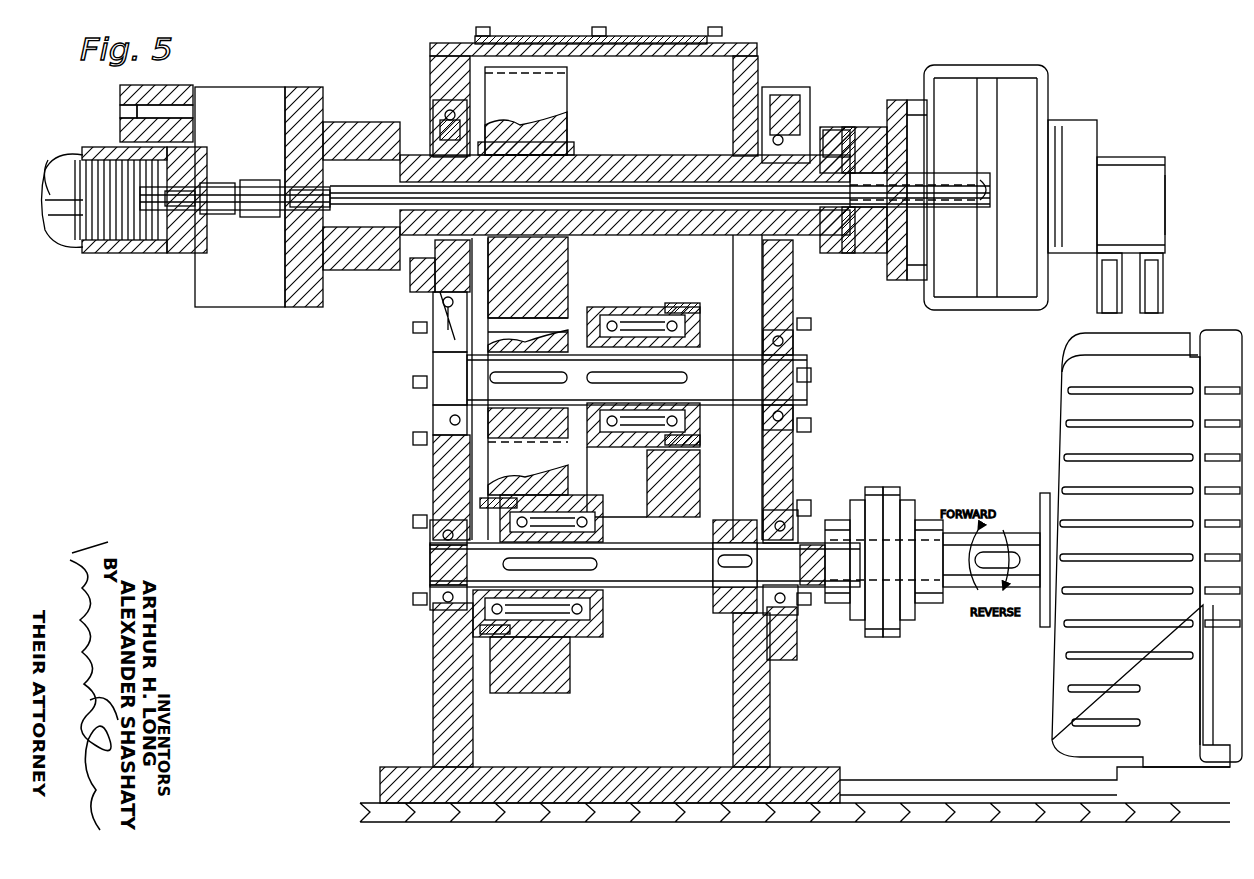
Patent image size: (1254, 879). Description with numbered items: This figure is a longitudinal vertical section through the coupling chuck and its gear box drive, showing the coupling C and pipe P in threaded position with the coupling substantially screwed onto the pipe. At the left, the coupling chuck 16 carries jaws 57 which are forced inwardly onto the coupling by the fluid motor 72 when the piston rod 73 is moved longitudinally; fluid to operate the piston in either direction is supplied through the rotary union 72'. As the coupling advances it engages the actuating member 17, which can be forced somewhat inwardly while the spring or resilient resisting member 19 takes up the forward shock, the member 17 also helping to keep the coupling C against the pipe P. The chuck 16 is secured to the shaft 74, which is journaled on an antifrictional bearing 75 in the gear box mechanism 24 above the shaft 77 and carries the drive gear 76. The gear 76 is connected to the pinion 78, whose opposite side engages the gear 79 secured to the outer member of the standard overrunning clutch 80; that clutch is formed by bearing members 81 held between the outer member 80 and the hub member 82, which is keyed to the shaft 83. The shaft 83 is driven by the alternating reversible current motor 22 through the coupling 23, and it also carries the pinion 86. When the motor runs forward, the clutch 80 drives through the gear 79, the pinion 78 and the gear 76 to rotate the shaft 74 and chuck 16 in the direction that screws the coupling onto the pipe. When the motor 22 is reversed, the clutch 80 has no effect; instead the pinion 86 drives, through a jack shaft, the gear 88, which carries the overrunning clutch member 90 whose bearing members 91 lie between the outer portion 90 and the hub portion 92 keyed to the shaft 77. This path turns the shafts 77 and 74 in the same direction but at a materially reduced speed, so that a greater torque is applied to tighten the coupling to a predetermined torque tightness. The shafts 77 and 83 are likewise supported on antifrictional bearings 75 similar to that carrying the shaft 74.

The coupling chuck 16 is at (240, 97).
The actuating member 17 is at (153, 237).
The spring or resilient resisting member 19 is at (242, 210).
The alternating reversible current motor 22 is at (1087, 410).
The coupling 23 is at (890, 510).
The gear box mechanism 24 is at (443, 680).
The jaws 57 is at (130, 128).
The fluid motor 72 is at (962, 187).
The rotary union 72' is at (1108, 216).
The piston rod 73 is at (623, 240).
The shaft 74 is at (653, 170).
The antifrictional bearings 75 is at (458, 152).
The drive gear 76 is at (543, 127).
The shaft 77 is at (477, 365).
The pinion 78 is at (540, 320).
The gear 79 is at (550, 673).
The overrunning clutch 80 is at (590, 637).
The bearing members 81 is at (603, 627).
The hub member 82 is at (587, 590).
The shaft 83 is at (473, 563).
The pinion 86 is at (720, 600).
The gear 88 is at (660, 480).
The overrunning clutch member 90 is at (633, 437).
The bearing members 91 is at (680, 423).
The hub portion 92 is at (647, 413).
The pipe P is at (58, 220).
The coupling C is at (107, 250).